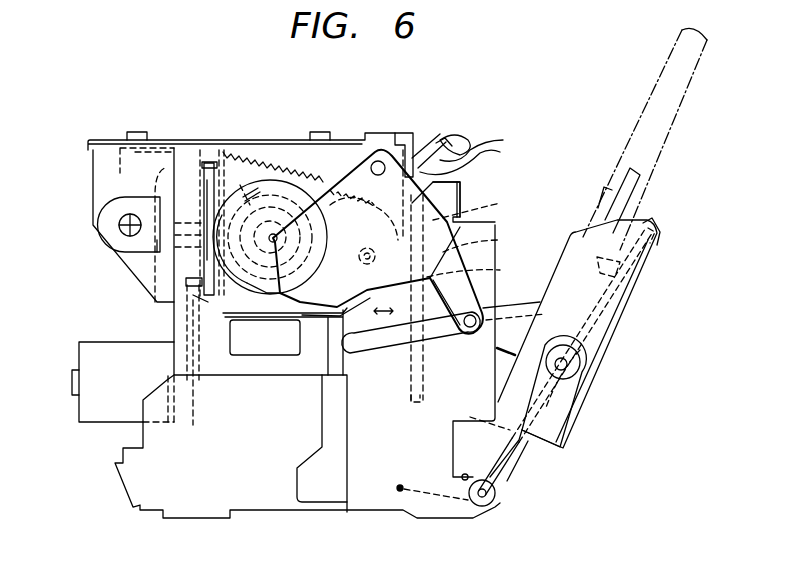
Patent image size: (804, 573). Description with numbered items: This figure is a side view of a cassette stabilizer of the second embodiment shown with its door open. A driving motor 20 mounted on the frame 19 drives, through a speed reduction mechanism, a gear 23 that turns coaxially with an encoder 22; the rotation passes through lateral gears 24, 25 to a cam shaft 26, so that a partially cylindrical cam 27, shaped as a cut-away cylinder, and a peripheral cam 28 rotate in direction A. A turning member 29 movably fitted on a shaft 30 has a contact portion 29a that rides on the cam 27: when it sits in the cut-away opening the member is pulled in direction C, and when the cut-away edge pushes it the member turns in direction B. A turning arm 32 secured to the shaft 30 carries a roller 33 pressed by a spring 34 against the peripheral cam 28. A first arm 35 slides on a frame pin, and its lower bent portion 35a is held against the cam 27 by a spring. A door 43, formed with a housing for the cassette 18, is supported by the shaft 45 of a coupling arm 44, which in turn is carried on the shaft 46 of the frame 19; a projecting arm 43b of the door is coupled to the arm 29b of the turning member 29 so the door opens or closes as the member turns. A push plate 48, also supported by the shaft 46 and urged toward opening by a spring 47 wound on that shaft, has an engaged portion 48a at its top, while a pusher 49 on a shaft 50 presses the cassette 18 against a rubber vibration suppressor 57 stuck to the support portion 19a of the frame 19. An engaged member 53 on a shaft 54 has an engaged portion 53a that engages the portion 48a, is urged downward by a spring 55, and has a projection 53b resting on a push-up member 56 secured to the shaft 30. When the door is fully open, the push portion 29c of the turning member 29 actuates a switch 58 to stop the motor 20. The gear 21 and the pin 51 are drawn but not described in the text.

The cassette 18 is at (657, 100).
The frame 19 is at (372, 500).
The support portion 19a is at (403, 397).
The driving motor 20 is at (95, 355).
The worm gear 21 is at (195, 405).
The encoder 22 is at (157, 277).
The gear 23 is at (210, 162).
The lateral gear 24 is at (247, 207).
The lateral gear 25 is at (270, 150).
The cam shaft 26 is at (275, 235).
The partially cylindrical cam 27 is at (265, 300).
The peripheral cam 28 is at (229, 340).
The turning member 29 is at (473, 217).
The contact portion 29a is at (312, 240).
The arm 29b is at (460, 275).
The push portion 29c is at (347, 358).
The shaft 30 is at (390, 157).
The turning arm 32 is at (455, 192).
The roller 33 is at (468, 255).
The spring 34 is at (280, 168).
The first arm 35 is at (212, 157).
The lower bent portion 35a is at (203, 198).
The door 43 is at (617, 330).
The projecting arm 43b is at (518, 313).
The coupling arm 44 is at (507, 442).
The shaft 45 is at (578, 364).
The shaft 46 is at (493, 503).
The spring 47 is at (439, 497).
The push plate 48 is at (518, 475).
The engaged portion 48a is at (647, 220).
The pusher 49 is at (650, 267).
The shaft 50 is at (613, 287).
The pivot pin 51 is at (471, 330).
The engaged member 53 is at (473, 168).
The engaged portion 53a is at (470, 150).
The projection 53b is at (445, 140).
The shaft 54 is at (402, 150).
The spring 55 is at (503, 148).
The push-up member 56 is at (422, 150).
The vibration suppressor 57 is at (425, 355).
The switch 58 is at (285, 357).